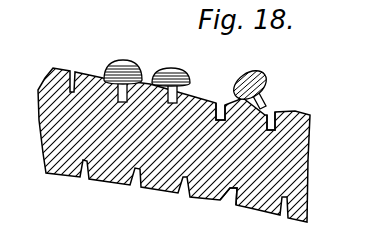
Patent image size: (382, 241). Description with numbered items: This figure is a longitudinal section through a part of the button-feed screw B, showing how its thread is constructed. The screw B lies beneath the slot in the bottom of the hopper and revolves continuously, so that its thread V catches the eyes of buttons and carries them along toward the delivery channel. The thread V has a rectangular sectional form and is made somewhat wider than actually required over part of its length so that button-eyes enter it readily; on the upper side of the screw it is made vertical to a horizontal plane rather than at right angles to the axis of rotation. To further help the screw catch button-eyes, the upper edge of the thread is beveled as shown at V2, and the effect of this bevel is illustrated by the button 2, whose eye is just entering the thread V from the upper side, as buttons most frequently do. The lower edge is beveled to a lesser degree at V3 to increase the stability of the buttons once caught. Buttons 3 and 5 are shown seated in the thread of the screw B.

The button-feed screw B is at (191, 120).
The thread V is at (233, 190).
The beveled upper edge V2 is at (214, 97).
The beveled lower edge V3 is at (285, 103).
The button 2 is at (263, 73).
The rivet 3 is at (182, 71).
The rivet 5 is at (130, 61).